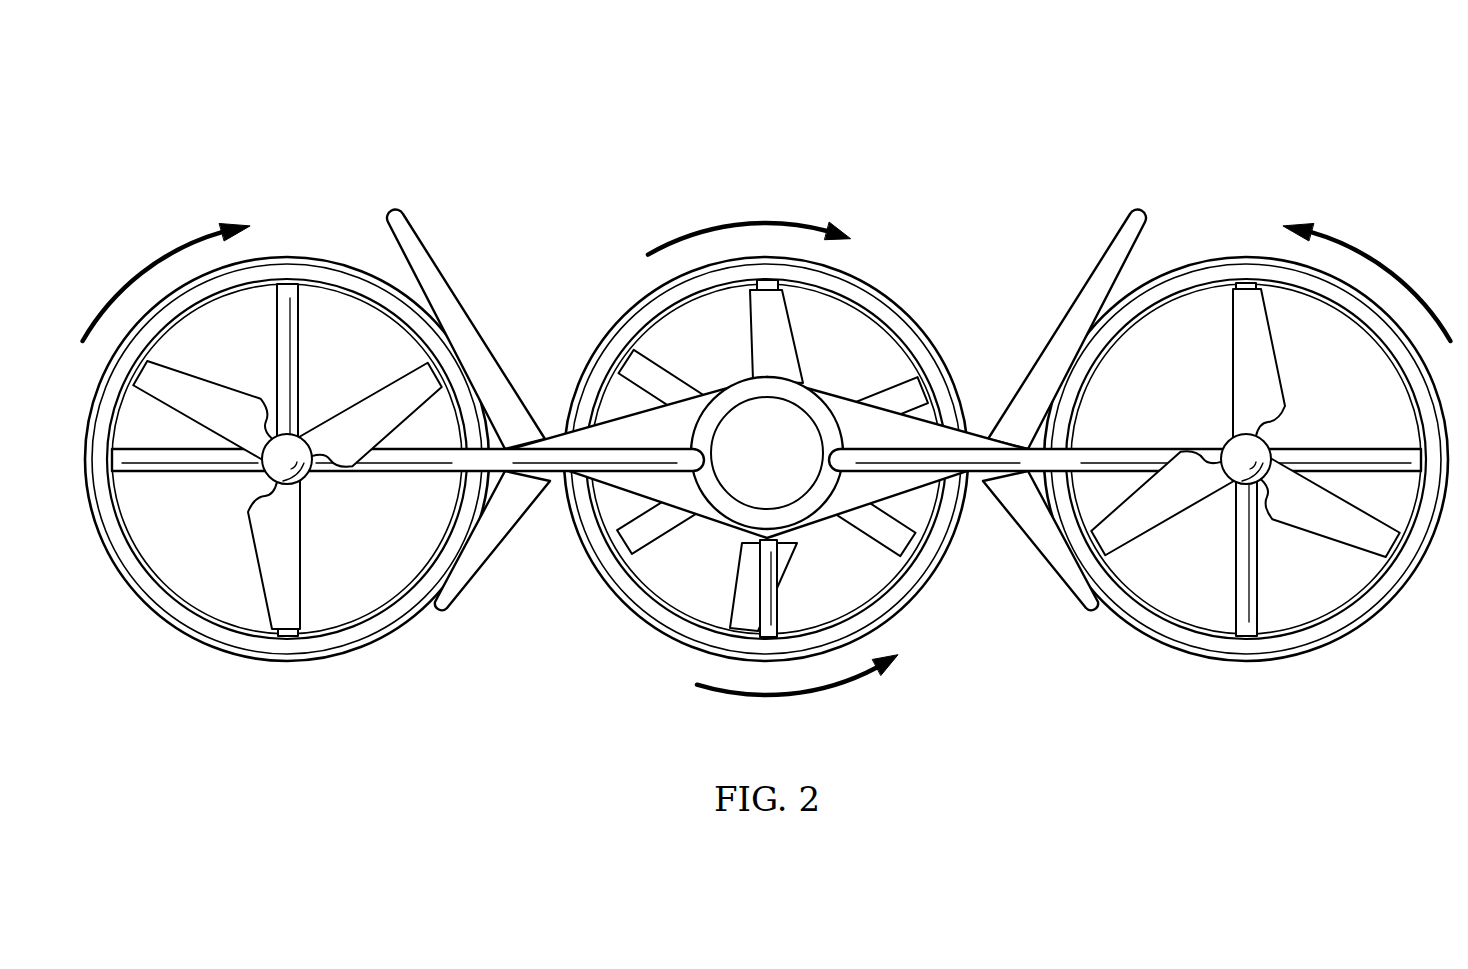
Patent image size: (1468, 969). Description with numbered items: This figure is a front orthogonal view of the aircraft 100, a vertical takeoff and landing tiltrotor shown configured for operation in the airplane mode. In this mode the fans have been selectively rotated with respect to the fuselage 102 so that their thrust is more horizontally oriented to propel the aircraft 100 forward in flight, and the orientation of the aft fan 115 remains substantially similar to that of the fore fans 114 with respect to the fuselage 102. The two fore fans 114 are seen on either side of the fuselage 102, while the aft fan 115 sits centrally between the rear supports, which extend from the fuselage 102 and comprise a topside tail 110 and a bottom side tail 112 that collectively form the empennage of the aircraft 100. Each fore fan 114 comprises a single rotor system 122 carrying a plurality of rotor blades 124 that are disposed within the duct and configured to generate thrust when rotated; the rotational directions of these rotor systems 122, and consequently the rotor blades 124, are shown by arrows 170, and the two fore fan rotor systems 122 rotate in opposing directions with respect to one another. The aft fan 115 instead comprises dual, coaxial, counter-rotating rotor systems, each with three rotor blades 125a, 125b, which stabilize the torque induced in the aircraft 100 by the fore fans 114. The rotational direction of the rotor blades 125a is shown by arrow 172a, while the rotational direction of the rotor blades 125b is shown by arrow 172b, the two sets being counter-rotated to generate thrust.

The aircraft 100 is at (562, 148).
The fuselage 102 is at (815, 386).
The topside tail 110 is at (443, 270).
The bottom side tail 112 is at (483, 561).
The fore fan 114 is at (178, 638).
The aft fan 115 is at (622, 304).
The rotor system 122 is at (306, 477).
The rotor blade 124 is at (250, 533).
The rotor blade 125a is at (665, 540).
The rotor blade 125b is at (680, 382).
The arrow 170 is at (145, 272).
The arrow 172a is at (807, 696).
The arrow 172b is at (717, 227).